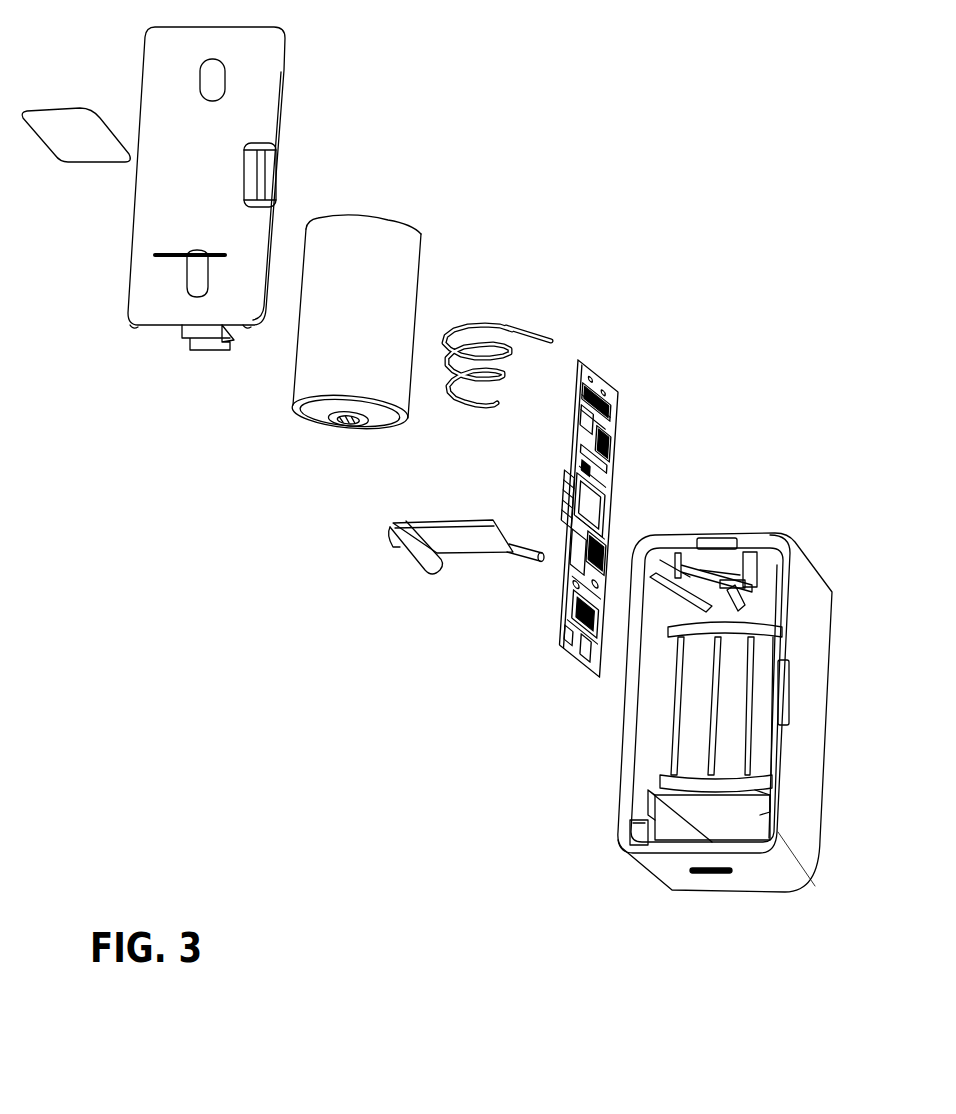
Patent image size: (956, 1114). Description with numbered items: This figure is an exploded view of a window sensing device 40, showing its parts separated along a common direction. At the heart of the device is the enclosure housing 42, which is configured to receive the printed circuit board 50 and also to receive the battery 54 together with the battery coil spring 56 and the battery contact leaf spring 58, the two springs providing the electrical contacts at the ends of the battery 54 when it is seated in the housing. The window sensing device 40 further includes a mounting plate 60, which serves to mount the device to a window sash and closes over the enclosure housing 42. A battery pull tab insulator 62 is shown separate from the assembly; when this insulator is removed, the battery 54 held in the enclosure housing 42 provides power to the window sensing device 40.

The window sensing device 40 is at (266, 554).
The enclosure housing 42 is at (800, 798).
The printed circuit board 50 is at (610, 414).
The battery 54 is at (358, 214).
The battery coil spring 56 is at (505, 320).
The battery contact leaf spring 58 is at (458, 540).
The mounting plate 60 is at (285, 96).
The battery pull tab insulator 62 is at (70, 106).